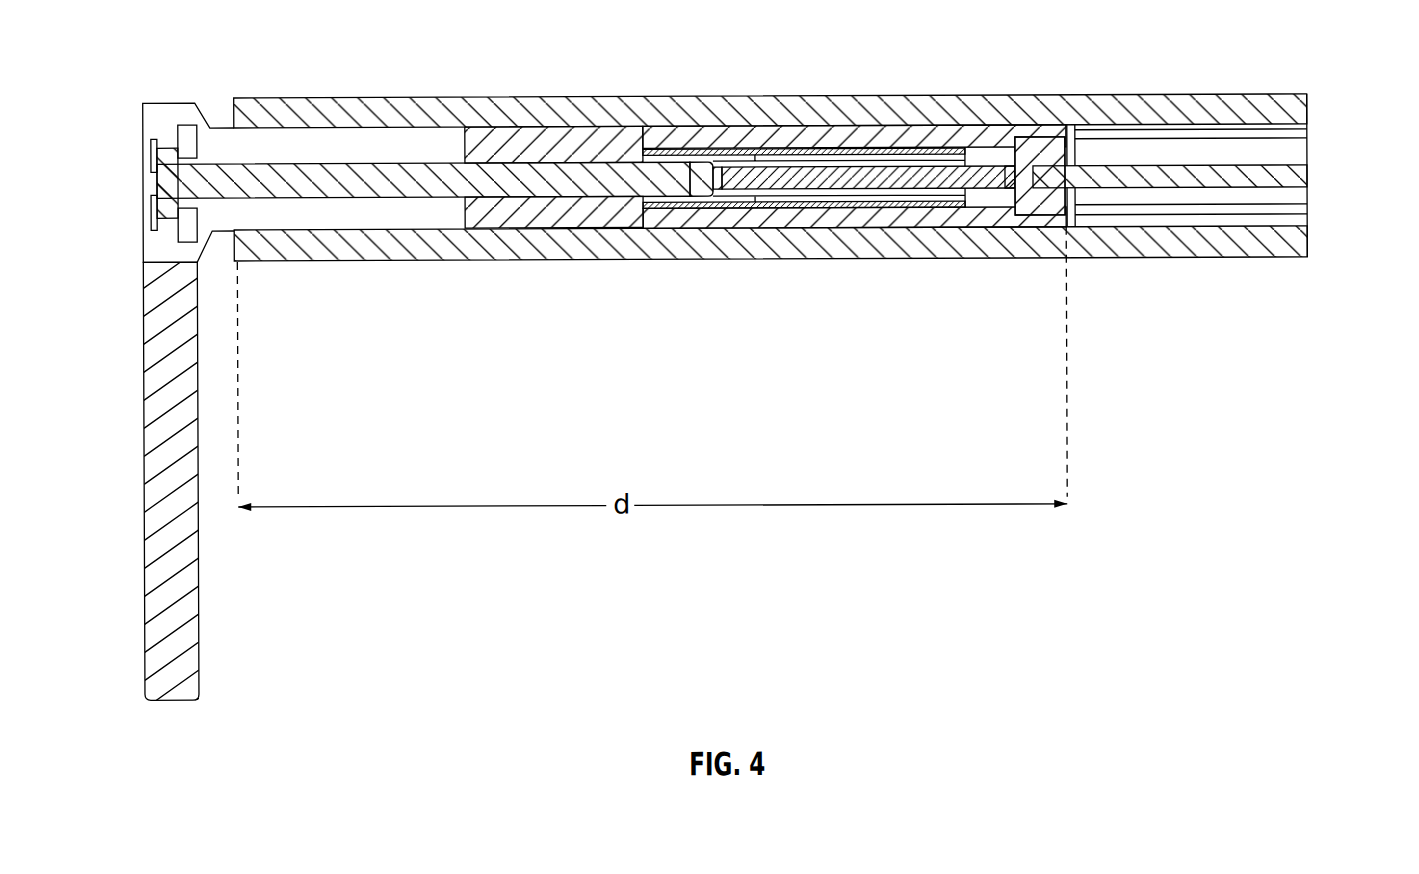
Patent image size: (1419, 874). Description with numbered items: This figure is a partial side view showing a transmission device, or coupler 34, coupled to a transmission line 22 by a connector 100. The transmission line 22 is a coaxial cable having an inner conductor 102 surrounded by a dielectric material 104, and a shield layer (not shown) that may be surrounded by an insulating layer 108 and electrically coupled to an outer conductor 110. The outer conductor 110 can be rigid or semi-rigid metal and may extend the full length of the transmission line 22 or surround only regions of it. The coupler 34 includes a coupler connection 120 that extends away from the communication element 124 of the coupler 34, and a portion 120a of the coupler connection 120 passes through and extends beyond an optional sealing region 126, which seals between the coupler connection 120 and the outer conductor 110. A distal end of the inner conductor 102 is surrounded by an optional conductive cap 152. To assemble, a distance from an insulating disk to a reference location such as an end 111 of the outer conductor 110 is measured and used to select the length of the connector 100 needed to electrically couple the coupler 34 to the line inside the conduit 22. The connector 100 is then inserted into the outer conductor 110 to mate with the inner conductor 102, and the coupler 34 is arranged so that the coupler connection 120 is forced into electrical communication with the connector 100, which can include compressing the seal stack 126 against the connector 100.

The transmission device 34 is at (186, 45).
The connector 100 is at (770, 177).
The outer conductor 110 is at (823, 112).
The end of the outer conductor 111 is at (330, 252).
The sealing region 126 is at (497, 140).
The coupler connection 120 is at (435, 225).
The portion of the coupler connection 120a is at (669, 182).
The communication element 124 is at (150, 212).
The conductive cap 152 is at (1039, 147).
The transmission line 22 is at (1209, 150).
The dielectric material 104 is at (1300, 137).
The inner conductor 102 is at (1300, 178).
The insulating layer 108 is at (1300, 212).